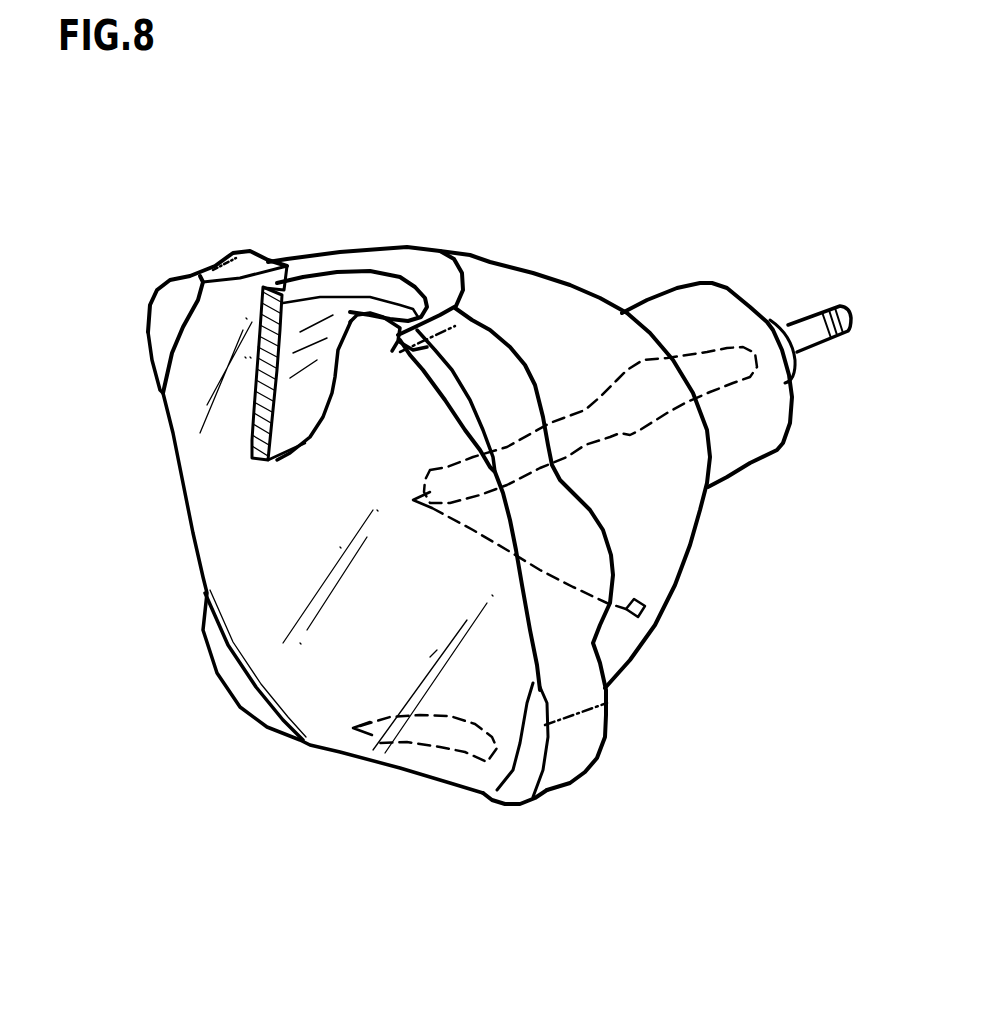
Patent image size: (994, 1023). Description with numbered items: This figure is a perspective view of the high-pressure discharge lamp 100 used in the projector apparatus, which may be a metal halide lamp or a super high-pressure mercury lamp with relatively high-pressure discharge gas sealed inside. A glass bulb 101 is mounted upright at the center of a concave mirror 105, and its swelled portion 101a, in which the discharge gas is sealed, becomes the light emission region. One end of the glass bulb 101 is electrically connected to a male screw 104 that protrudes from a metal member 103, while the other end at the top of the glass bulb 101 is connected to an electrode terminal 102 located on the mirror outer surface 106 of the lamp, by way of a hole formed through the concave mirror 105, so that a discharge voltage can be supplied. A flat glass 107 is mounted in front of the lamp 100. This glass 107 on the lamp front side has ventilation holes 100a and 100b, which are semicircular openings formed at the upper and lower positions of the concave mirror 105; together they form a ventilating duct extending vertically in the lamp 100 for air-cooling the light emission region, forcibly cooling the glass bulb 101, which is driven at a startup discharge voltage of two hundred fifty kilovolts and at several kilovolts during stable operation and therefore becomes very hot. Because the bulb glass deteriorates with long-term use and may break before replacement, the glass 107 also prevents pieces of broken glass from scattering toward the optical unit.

The high-pressure discharge lamp 100 is at (235, 190).
The ventilation hole 100a is at (333, 285).
The ventilation hole 100b is at (433, 738).
The glass bulb 101 is at (437, 468).
The swelled portion 101a is at (637, 390).
The electrode terminal 102 is at (645, 606).
The metal member 103 is at (790, 317).
The male screw 104 is at (833, 307).
The concave mirror 105 is at (290, 415).
The mirror outer surface 106 is at (513, 263).
The flat glass 107 is at (247, 493).